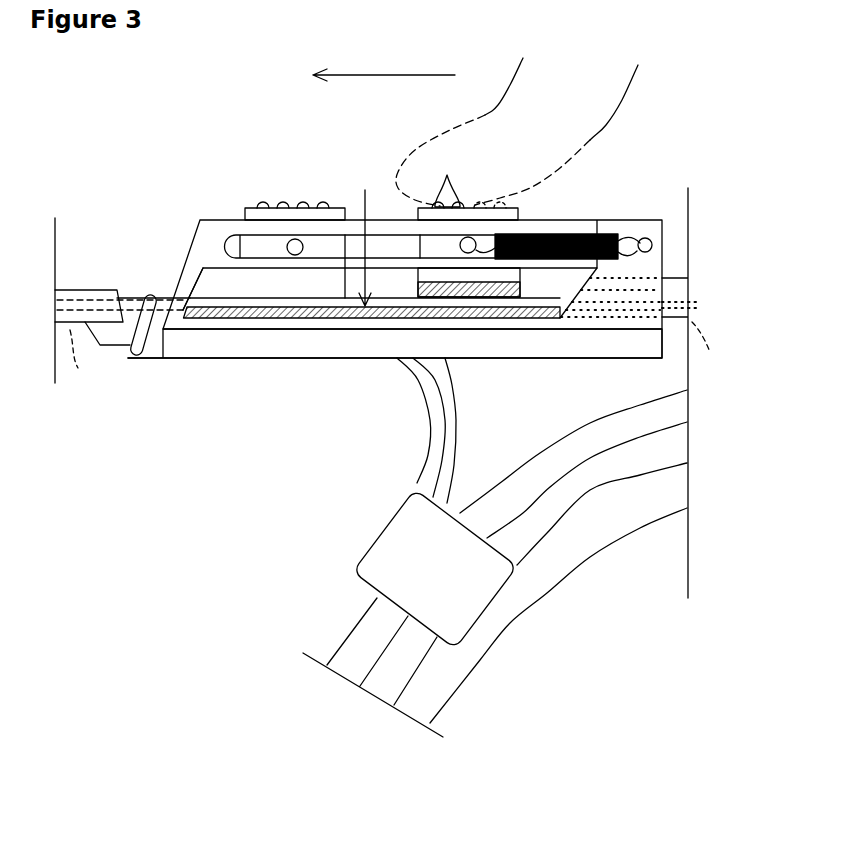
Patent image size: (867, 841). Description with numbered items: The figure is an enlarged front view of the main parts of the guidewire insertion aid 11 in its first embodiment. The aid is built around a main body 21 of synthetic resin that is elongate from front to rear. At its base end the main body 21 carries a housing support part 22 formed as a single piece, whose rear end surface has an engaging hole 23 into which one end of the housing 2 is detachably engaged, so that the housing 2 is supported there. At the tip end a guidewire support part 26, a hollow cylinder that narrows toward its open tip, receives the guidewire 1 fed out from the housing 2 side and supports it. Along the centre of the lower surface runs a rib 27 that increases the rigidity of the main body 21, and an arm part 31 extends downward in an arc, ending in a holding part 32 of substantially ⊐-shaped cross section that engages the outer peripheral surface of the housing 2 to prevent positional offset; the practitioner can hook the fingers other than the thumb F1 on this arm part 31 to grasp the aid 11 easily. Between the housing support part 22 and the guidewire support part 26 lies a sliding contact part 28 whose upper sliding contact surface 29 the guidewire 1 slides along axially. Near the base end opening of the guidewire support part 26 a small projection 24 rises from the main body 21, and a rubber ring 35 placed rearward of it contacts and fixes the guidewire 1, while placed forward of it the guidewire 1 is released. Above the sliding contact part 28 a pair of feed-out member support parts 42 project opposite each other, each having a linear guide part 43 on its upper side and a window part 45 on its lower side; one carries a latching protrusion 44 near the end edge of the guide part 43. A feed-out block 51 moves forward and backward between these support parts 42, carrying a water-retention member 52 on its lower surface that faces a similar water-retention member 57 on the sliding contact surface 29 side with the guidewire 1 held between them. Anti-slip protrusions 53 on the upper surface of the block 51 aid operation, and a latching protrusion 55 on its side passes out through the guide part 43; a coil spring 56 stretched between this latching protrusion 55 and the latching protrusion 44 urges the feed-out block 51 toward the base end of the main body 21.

The guidewire 1 is at (357, 372).
The housing 2 is at (688, 278).
The guidewire insertion aid 11 is at (129, 134).
The main body 21 is at (228, 358).
The housing support part 22 is at (638, 339).
The engaging hole 23 is at (607, 320).
The projection 24 is at (142, 298).
The guidewire support part 26 is at (72, 290).
The rib 27 is at (333, 358).
The sliding contact part 28 is at (272, 340).
The sliding contact surface 29 is at (367, 232).
The arm part 31 is at (430, 440).
The holding part 32 is at (456, 595).
The rubber ring 35 is at (123, 350).
The feed-out member support parts 42 is at (213, 220).
The guide part 43 is at (303, 242).
The latching protrusion 44 is at (645, 238).
The window part 45 is at (192, 326).
The feed-out block 51 is at (275, 208).
The water-retention member 52 is at (505, 297).
The anti-slip protrusions 53 is at (447, 176).
The latching protrusion 55 is at (471, 236).
The coil spring 56 is at (570, 222).
The water-retention member 57 is at (472, 320).
The thumb F1 is at (623, 102).